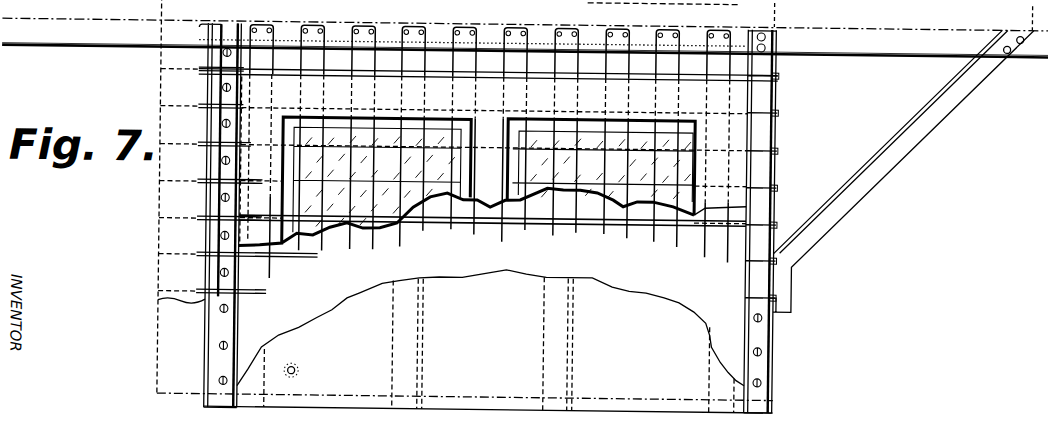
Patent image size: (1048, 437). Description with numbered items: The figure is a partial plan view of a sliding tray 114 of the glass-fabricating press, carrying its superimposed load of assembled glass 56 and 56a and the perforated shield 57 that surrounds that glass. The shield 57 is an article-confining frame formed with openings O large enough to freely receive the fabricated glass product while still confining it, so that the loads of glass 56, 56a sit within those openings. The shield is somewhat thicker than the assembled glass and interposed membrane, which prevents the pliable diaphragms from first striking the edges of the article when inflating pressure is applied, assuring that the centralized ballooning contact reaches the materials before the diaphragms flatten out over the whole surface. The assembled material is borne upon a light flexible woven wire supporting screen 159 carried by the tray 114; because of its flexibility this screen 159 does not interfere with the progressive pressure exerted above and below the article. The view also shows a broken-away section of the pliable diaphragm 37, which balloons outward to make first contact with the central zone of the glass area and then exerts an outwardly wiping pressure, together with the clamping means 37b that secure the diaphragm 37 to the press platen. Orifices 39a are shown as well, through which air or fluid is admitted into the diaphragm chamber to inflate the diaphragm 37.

The sliding tray 114 is at (525, 43).
The openings O is at (290, 130).
The shield 57 is at (472, 154).
The assembled glass 56 is at (377, 180).
The assembled glass 56a is at (621, 172).
The woven wire supporting screen 159 is at (232, 182).
The diaphragm 37 is at (466, 340).
The clamping means 37b is at (838, 337).
The orifices 39a is at (300, 370).